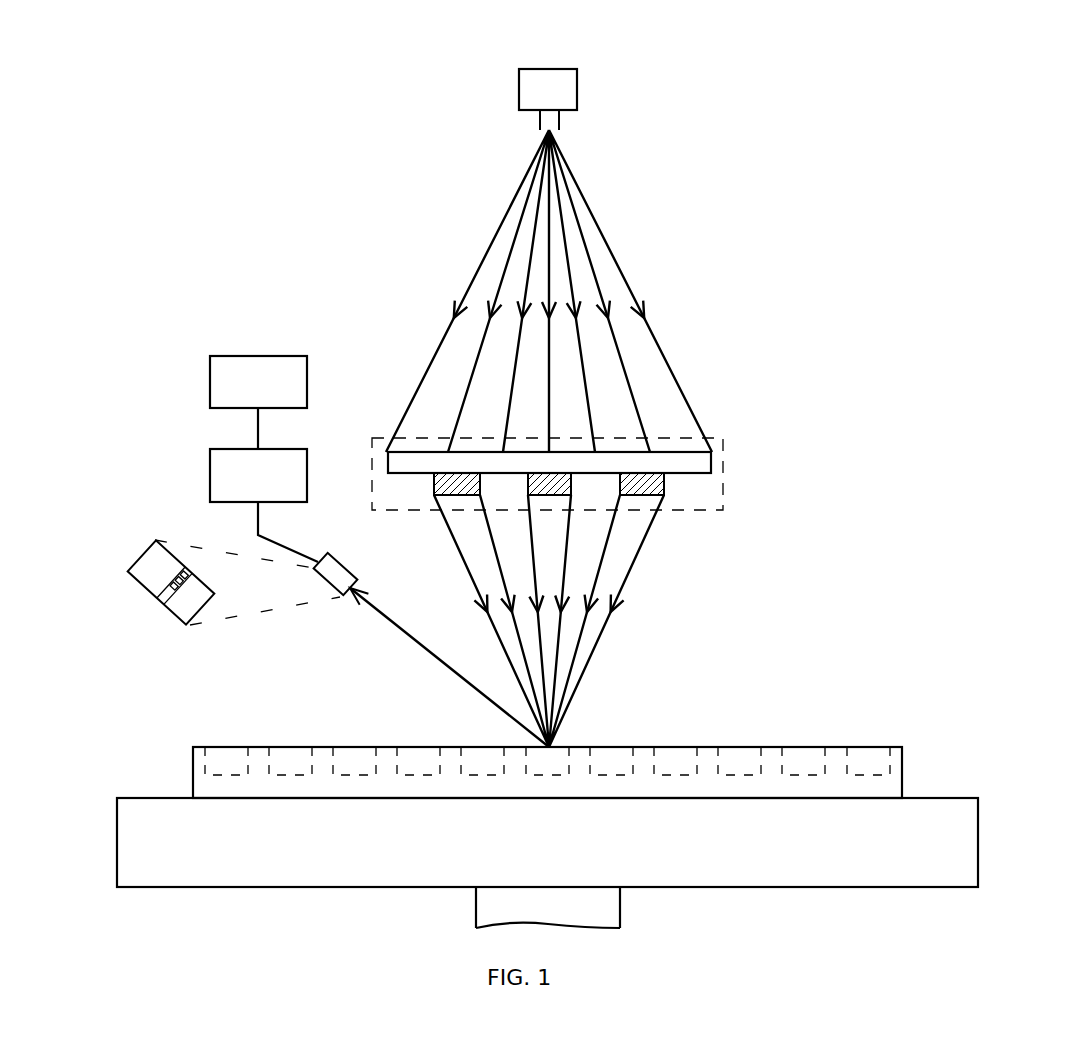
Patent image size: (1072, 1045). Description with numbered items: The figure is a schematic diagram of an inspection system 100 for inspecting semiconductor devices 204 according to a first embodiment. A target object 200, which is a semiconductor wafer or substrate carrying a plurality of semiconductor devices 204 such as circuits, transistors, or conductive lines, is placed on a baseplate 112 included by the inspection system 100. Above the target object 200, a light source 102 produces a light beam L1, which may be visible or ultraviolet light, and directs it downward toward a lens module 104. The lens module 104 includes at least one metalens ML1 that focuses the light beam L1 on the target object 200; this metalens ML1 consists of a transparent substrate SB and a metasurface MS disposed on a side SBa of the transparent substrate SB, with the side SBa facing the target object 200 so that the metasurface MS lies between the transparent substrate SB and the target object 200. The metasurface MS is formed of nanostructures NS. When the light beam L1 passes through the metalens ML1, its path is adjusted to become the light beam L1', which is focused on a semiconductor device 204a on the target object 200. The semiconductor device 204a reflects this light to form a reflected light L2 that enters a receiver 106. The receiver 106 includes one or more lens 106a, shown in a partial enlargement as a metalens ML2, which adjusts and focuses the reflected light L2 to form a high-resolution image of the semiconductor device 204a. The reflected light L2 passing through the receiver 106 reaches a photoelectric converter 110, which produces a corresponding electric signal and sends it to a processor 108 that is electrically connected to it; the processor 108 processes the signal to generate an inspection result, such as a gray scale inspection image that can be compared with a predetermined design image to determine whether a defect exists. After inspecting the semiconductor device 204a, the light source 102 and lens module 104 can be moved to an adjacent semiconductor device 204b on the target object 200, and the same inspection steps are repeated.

The inspection system 100 is at (918, 203).
The light source 102 is at (578, 100).
The lens module 104 is at (655, 488).
The receiver 106 is at (347, 565).
The lens 106a is at (203, 591).
The processor 108 is at (258, 382).
The photoelectric converter 110 is at (258, 455).
The baseplate 112 is at (547, 863).
The target object 200 is at (892, 785).
The semiconductor device 204 is at (547, 816).
The semiconductor device 204a is at (553, 757).
The adjacent semiconductor device 204b is at (613, 762).
The light beam L1 is at (549, 291).
The light beam L1' is at (563, 621).
The reflected light L2 is at (428, 650).
The transparent substrate SB is at (700, 462).
The side of transparent substrate SBa is at (687, 477).
The nanostructures NS is at (764, 525).
The metasurface MS is at (668, 483).
The metalens ML1 is at (663, 508).
The metalens ML2 is at (160, 598).